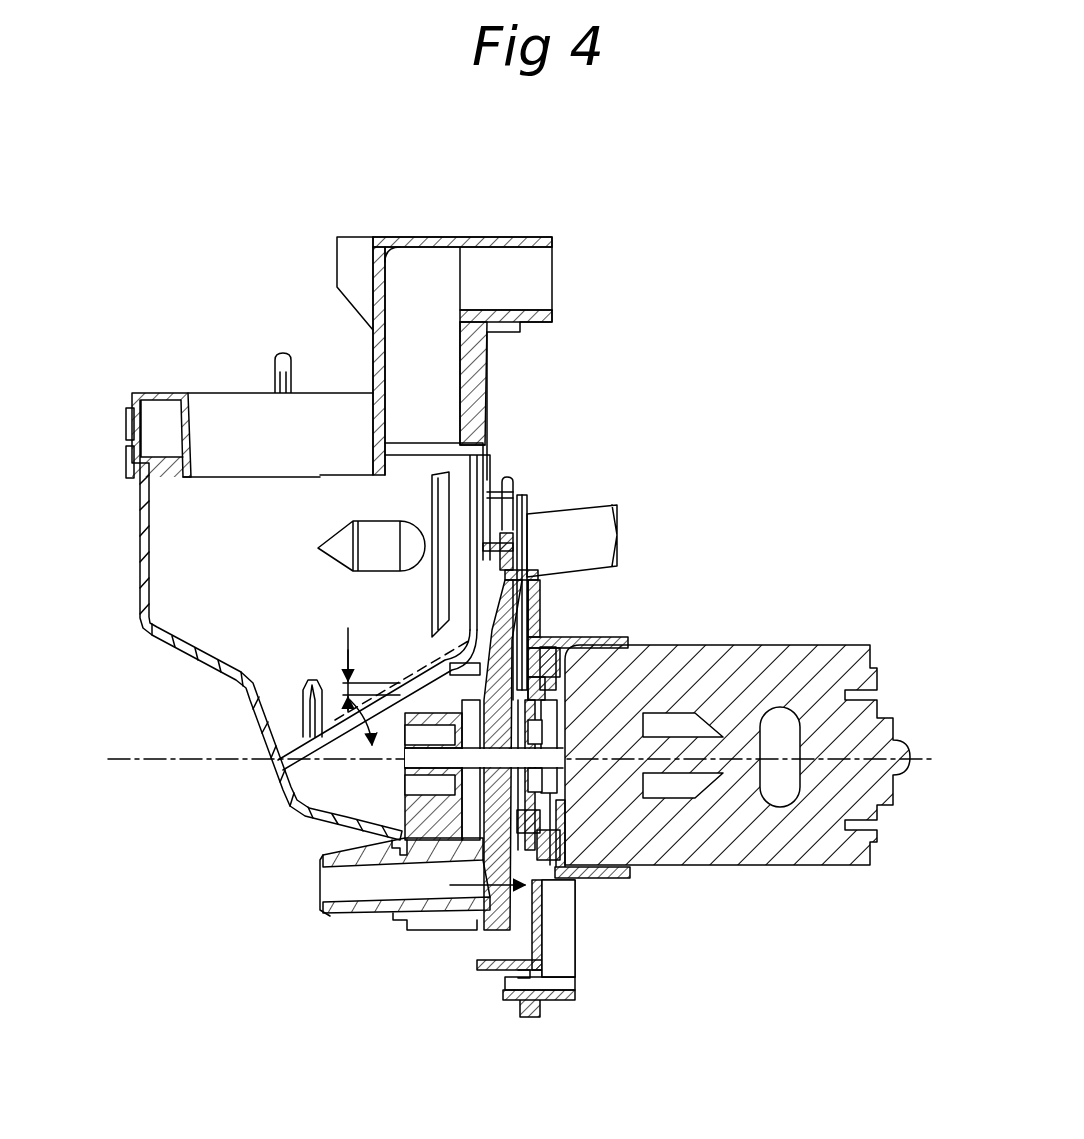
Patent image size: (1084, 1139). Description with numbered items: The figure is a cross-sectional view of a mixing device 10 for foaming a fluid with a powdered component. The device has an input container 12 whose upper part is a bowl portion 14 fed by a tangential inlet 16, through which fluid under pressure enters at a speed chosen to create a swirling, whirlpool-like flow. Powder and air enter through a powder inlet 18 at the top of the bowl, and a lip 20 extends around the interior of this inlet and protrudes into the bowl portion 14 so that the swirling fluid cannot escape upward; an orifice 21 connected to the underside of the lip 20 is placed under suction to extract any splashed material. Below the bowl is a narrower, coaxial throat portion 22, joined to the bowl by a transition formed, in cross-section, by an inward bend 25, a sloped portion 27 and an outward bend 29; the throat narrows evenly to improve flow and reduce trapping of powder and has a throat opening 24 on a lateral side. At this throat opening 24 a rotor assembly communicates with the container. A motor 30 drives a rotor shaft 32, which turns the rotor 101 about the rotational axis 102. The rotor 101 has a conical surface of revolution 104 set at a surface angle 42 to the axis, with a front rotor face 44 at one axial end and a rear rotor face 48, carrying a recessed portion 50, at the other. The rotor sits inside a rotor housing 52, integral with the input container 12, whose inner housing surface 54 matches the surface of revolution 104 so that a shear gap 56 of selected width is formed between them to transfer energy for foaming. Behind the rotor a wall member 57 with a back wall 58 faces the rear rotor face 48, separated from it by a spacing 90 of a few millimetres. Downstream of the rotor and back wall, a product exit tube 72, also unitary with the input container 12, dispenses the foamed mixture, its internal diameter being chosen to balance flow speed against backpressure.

The mixing device 10 is at (545, 405).
The input container 12 is at (207, 505).
The bowl portion 14 is at (228, 572).
The tangential inlet 16 is at (372, 535).
The powder inlet 18 is at (274, 450).
The lip 20 is at (185, 434).
The orifice 21 is at (535, 280).
The throat portion 22 is at (262, 718).
The throat opening 24 is at (368, 772).
The inward bend 25 is at (160, 637).
The sloped portion 27 is at (200, 668).
The outward bend 29 is at (240, 697).
The motor 30 is at (737, 850).
The rotor shaft 32 is at (565, 762).
The surface angle 42 is at (290, 787).
The front rotor face 44 is at (440, 800).
The rear rotor face 48 is at (540, 703).
The recessed portion 50 is at (737, 766).
The rotor housing 52 is at (470, 700).
The inner housing surface 54 is at (618, 506).
The shear gap 56 is at (395, 674).
The wall member 57 is at (537, 883).
The back wall 58 is at (490, 870).
The product exit tube 72 is at (386, 913).
The spacing 90 is at (462, 800).
The rotor 101 is at (412, 815).
The rotational axis 102 is at (130, 755).
The conical surface of revolution 104 is at (467, 830).